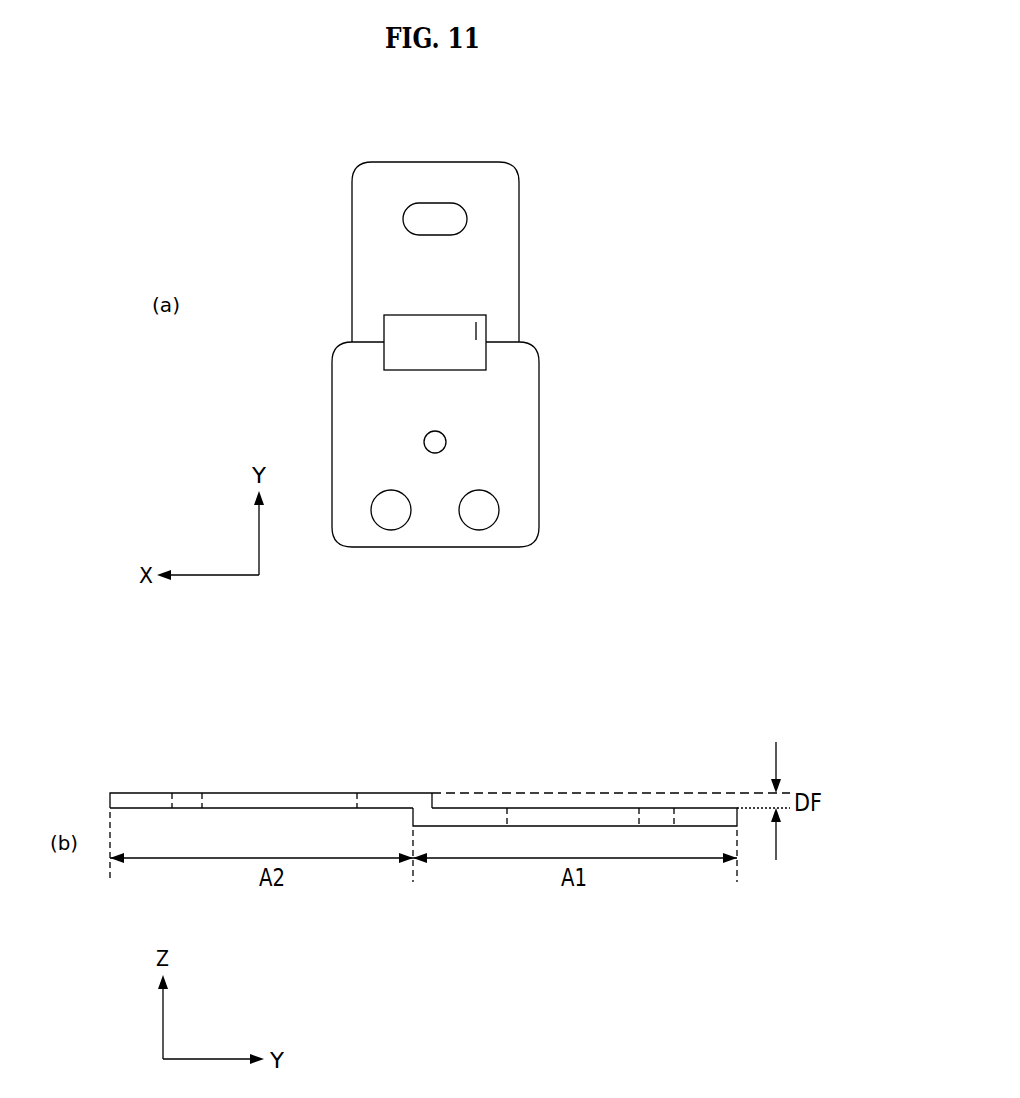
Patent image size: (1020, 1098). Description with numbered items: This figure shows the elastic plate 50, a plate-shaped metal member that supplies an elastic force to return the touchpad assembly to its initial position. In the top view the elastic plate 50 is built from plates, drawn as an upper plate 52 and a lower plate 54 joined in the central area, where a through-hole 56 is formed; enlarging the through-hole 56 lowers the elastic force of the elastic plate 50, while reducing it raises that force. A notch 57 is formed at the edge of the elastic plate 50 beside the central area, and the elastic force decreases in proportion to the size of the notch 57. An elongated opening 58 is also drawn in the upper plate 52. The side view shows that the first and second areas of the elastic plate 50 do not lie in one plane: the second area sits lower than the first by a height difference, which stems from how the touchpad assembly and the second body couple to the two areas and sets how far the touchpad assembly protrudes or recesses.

The elastic plate 50 is at (296, 153).
The first plate portion 52 is at (507, 215).
The second plate portion 54 is at (525, 396).
The through-hole 56 is at (476, 322).
The notch 57 is at (352, 342).
The elongated hole 58 is at (435, 212).